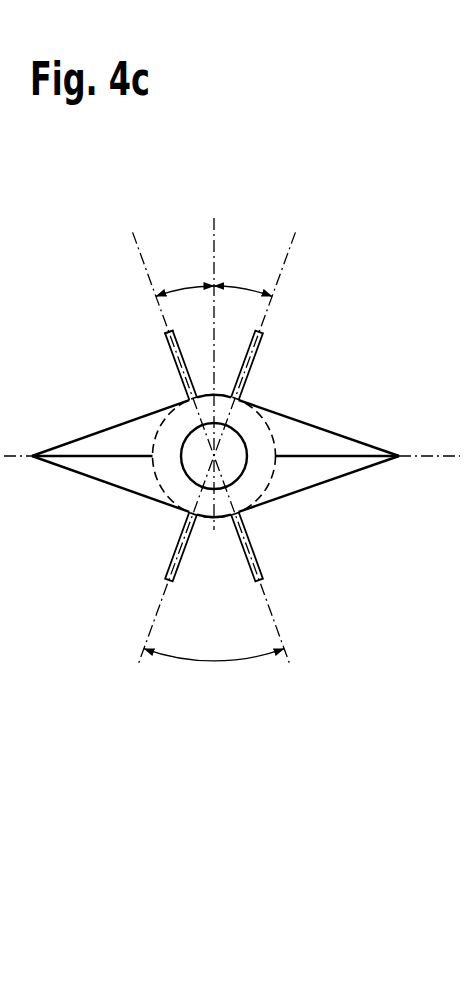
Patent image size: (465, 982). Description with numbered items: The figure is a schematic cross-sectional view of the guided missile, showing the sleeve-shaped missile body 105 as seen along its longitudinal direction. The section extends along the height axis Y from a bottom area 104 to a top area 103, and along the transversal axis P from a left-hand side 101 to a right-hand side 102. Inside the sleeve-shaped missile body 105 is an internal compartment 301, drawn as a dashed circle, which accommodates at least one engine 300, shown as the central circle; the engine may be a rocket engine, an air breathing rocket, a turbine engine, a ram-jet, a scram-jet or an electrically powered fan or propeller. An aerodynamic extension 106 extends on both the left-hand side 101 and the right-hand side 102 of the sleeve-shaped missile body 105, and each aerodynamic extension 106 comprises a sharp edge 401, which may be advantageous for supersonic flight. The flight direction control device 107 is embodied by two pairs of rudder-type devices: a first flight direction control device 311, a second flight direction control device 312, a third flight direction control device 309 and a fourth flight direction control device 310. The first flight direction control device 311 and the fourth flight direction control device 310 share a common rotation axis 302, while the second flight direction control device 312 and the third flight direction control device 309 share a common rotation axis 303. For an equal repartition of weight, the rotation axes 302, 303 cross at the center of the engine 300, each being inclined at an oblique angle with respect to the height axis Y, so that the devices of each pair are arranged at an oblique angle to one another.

The left-hand side 101 is at (33, 460).
The right-hand side 102 is at (400, 460).
The top area 103 is at (185, 393).
The bottom area 104 is at (212, 524).
The sleeve-shaped missile body 105 is at (115, 492).
The aerodynamic extension 106 is at (118, 430).
The flight direction control device 107 is at (165, 326).
The engine 300 is at (232, 446).
The internal compartment 301 is at (262, 476).
The rotation axis 302 is at (132, 242).
The rotation axis 303 is at (297, 243).
The third flight direction control device 309 is at (167, 572).
The fourth flight direction control device 310 is at (259, 567).
The first flight direction control device 311 is at (184, 360).
The second flight direction control device 312 is at (260, 342).
The sharp edge 401 is at (78, 441).
The height axis Y is at (216, 231).
The transversal axis P is at (437, 442).